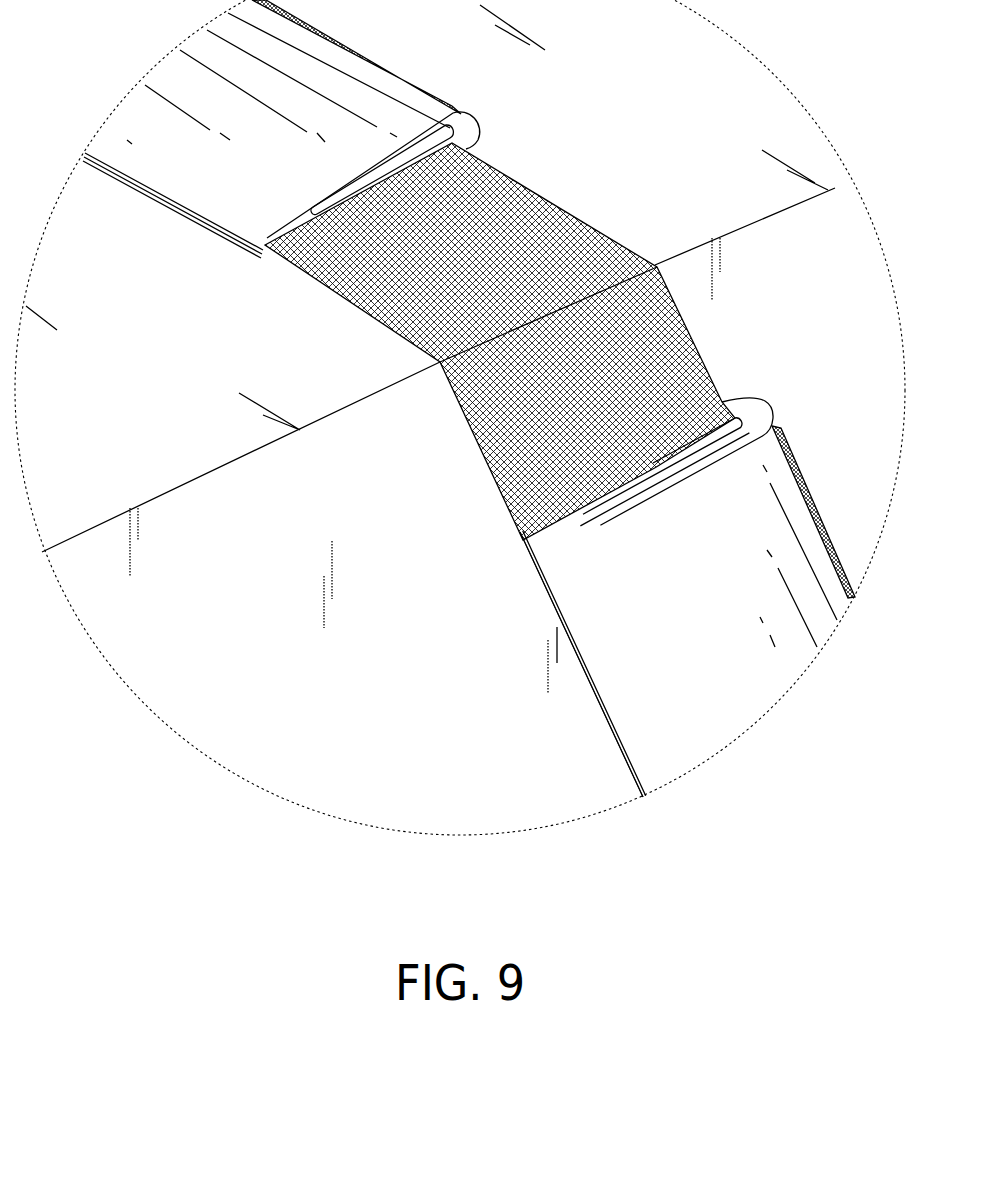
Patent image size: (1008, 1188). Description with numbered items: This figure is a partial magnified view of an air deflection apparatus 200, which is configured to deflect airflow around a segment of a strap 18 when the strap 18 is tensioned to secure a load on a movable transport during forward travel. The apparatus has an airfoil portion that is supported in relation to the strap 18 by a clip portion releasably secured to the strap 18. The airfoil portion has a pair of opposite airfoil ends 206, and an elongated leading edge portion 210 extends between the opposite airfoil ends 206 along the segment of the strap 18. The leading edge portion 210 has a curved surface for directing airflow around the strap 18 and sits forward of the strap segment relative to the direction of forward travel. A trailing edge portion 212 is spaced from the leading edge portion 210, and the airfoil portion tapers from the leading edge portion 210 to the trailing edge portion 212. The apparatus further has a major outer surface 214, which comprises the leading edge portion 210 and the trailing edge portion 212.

The strap 18 is at (515, 430).
The air deflection apparatus 200 is at (763, 595).
The airfoil ends 206 is at (740, 385).
The leading edge portion 210 is at (815, 477).
The trailing edge portion 212 is at (567, 702).
The major outer surface 214 is at (684, 620).